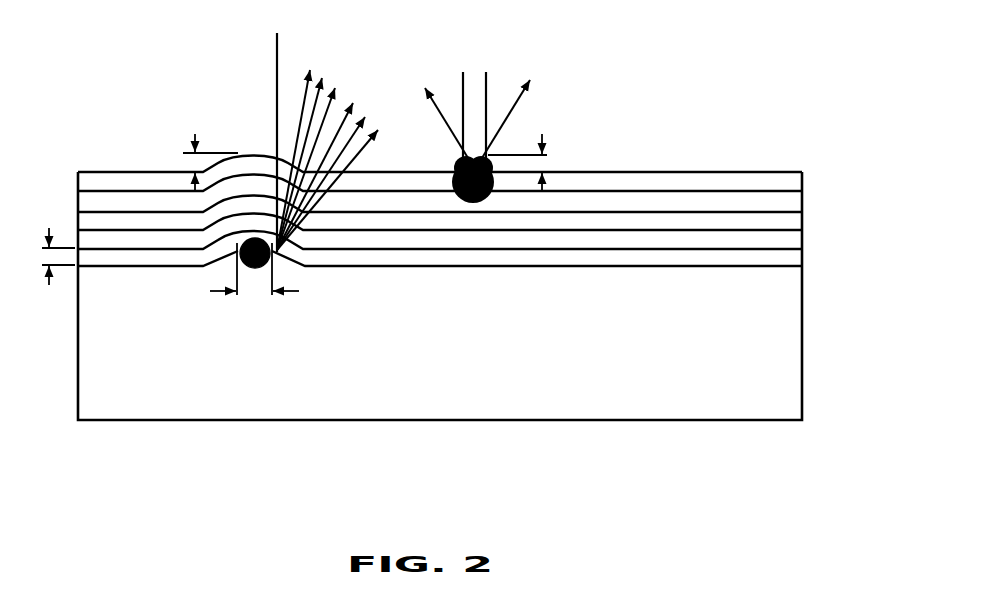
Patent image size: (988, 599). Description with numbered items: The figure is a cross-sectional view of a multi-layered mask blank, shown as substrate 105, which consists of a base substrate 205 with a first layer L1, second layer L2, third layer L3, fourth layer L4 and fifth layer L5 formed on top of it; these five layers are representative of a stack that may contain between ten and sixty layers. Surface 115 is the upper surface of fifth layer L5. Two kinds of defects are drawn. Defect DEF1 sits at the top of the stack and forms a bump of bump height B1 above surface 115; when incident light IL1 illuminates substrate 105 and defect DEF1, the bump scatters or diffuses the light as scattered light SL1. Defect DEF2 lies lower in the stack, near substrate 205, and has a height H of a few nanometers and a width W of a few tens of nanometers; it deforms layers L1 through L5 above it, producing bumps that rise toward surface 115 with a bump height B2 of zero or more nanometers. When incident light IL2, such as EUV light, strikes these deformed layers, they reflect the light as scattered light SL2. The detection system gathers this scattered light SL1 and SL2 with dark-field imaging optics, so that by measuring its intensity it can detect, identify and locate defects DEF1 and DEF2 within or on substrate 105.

The substrate 105 is at (745, 95).
The surface 115 is at (613, 173).
The substrate 205 is at (507, 396).
The first layer L1 is at (800, 260).
The second layer L2 is at (798, 238).
The third layer L3 is at (798, 220).
The fourth layer L4 is at (799, 201).
The fifth layer L5 is at (802, 175).
The defect DEF1 is at (475, 162).
The defect DEF2 is at (241, 249).
The incident light IL1 is at (462, 95).
The incident light IL2 is at (276, 50).
The scattered light SL1 is at (445, 110).
The scattered light SL2 is at (398, 120).
The bump height B1 is at (545, 165).
The bump height B2 is at (189, 162).
The height H is at (45, 256).
The width W is at (254, 279).